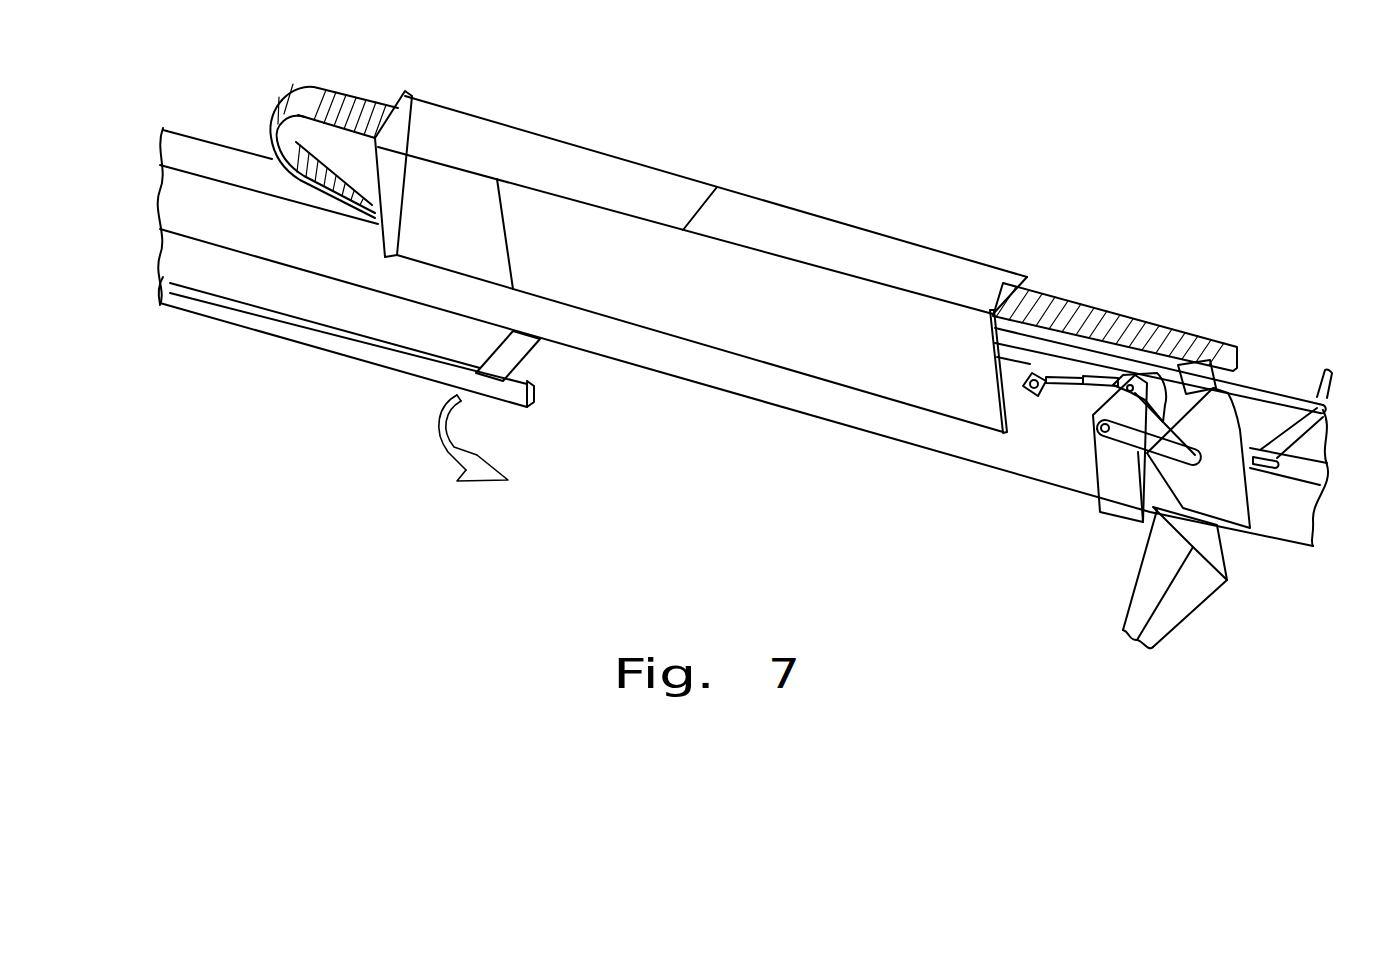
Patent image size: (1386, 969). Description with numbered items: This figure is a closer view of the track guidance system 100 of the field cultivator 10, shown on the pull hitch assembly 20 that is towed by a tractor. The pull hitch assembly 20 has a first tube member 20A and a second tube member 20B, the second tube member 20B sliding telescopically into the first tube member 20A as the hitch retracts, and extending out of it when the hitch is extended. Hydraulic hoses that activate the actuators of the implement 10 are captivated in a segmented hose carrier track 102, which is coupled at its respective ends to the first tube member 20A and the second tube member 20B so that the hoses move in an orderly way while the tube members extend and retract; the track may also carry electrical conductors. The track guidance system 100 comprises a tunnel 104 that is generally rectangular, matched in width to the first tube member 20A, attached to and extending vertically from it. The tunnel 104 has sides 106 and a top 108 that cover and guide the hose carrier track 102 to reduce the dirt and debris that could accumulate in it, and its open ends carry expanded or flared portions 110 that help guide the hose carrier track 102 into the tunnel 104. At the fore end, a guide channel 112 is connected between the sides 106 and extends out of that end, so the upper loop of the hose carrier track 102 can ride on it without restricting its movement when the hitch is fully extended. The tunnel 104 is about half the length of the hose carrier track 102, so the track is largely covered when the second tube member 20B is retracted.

The field cultivator 10 is at (797, 104).
The pull hitch assembly 20 is at (1056, 506).
The first tube member 20A is at (943, 454).
The second tube member 20B is at (1160, 518).
The track guidance system 100 is at (893, 200).
The hose carrier track 102 is at (1110, 310).
The tunnel 104 is at (607, 152).
The sides 106 is at (478, 235).
The top 108 is at (797, 245).
The expanded portions 110 is at (386, 232).
The guide channel 112 is at (1052, 365).